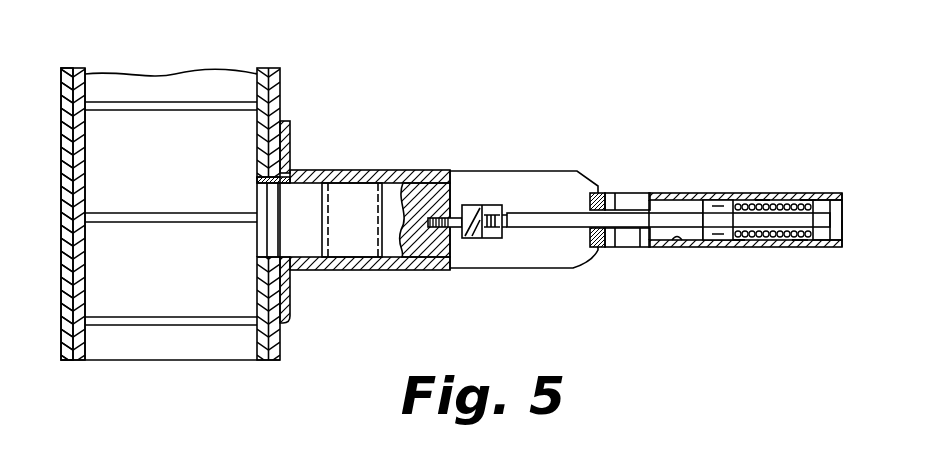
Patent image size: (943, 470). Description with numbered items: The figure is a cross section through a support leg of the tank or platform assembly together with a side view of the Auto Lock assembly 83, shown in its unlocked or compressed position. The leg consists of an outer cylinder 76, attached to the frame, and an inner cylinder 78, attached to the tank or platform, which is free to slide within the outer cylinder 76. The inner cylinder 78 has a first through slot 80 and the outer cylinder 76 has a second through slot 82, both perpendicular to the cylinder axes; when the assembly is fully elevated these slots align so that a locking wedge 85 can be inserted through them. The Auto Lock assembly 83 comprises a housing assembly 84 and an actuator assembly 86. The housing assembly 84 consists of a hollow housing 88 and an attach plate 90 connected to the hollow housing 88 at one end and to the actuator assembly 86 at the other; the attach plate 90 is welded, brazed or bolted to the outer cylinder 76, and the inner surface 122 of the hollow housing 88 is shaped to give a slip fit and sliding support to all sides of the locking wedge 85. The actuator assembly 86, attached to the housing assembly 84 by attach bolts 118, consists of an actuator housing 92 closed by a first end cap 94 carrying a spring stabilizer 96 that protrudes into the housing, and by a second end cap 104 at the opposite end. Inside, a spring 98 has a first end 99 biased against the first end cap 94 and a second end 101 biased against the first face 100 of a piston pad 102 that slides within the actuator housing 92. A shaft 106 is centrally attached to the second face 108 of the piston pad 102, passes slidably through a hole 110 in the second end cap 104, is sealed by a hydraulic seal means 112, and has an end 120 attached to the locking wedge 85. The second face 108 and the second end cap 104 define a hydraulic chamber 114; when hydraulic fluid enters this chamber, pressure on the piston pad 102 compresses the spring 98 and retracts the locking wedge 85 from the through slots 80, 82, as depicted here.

The outer cylinder 76 is at (67, 70).
The inner cylinder 78 is at (80, 70).
The first through slot 80 is at (257, 193).
The second through slot 82 is at (285, 193).
The Auto Lock assembly 83 is at (558, 165).
The housing assembly 84 is at (436, 168).
The locking wedge 85 is at (308, 232).
The actuator assembly 86 is at (852, 228).
The hollow housing 88 is at (348, 190).
The attach plate 90 is at (296, 318).
The actuator housing 92 is at (736, 197).
The first end cap 94 is at (830, 207).
The spring stabilizer 96 is at (808, 195).
The spring 98 is at (762, 198).
The first end of the spring 99 is at (800, 243).
The first face of the piston pad 100 is at (750, 243).
The second end of the spring 101 is at (740, 240).
The piston pad 102 is at (718, 198).
The second end cap 104 is at (627, 193).
The shaft 106 is at (521, 211).
The second face of the piston pad 108 is at (683, 192).
The hole 110 is at (640, 243).
The hydraulic seal means 112 is at (480, 240).
The hydraulic chamber 114 is at (677, 238).
The attach bolts 118 is at (600, 250).
The end of the shaft 120 is at (432, 229).
The inner surface of the hollow housing 122 is at (337, 246).